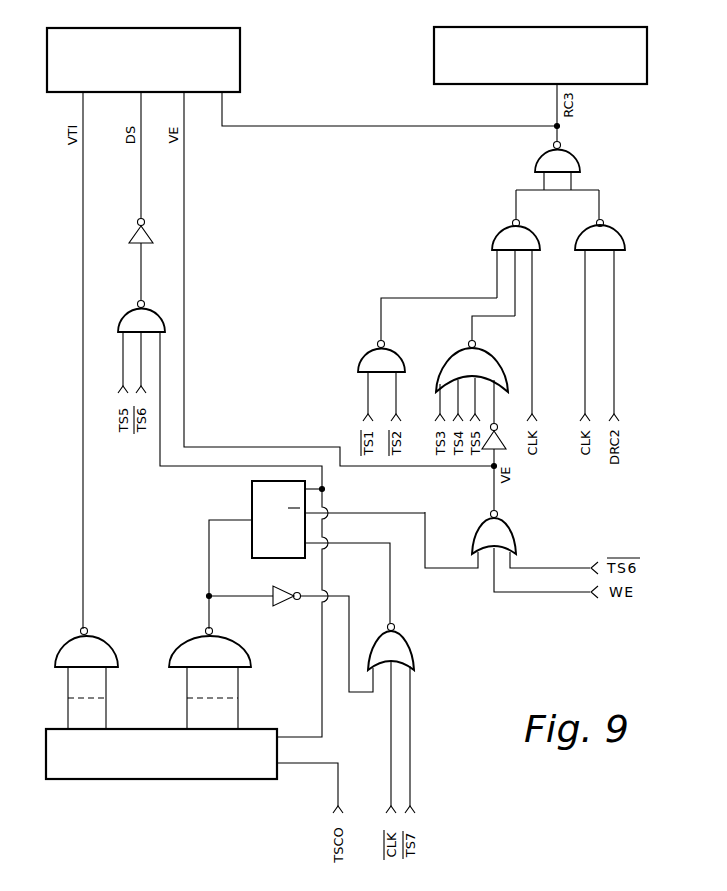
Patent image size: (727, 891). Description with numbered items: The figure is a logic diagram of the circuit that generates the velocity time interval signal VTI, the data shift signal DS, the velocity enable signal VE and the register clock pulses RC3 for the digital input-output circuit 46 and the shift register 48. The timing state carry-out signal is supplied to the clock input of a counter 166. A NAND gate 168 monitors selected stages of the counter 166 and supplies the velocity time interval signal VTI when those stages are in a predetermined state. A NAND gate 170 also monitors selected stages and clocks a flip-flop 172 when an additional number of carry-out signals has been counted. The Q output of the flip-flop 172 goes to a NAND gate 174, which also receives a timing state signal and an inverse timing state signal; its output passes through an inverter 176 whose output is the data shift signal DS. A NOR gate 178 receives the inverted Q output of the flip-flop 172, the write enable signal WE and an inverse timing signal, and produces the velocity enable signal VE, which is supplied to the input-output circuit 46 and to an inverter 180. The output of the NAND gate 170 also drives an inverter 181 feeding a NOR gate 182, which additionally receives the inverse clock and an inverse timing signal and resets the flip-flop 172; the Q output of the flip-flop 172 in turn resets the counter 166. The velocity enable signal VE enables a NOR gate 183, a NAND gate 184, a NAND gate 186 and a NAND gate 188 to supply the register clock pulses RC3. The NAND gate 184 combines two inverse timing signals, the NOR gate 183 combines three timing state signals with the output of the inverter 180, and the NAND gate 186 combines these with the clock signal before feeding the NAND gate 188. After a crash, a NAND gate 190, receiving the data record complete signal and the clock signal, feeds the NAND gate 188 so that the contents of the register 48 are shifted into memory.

The digital input-output circuit 46 is at (217, 62).
The shift register 48 is at (615, 73).
The counter 166 is at (208, 772).
The NAND gate 168 is at (75, 652).
The NAND gate 170 is at (187, 652).
The flip-flop 172 is at (263, 490).
The NAND gate 174 is at (138, 318).
The inverter 176 is at (138, 230).
The NOR gate 178 is at (500, 535).
The inverter 180 is at (503, 440).
The inverter 181 is at (290, 603).
The NOR gate 182 is at (398, 650).
The NOR gate 183 is at (460, 368).
The NAND gate 184 is at (375, 362).
The NAND gate 186 is at (508, 240).
The NAND gate 188 is at (546, 162).
The NAND gate 190 is at (608, 232).